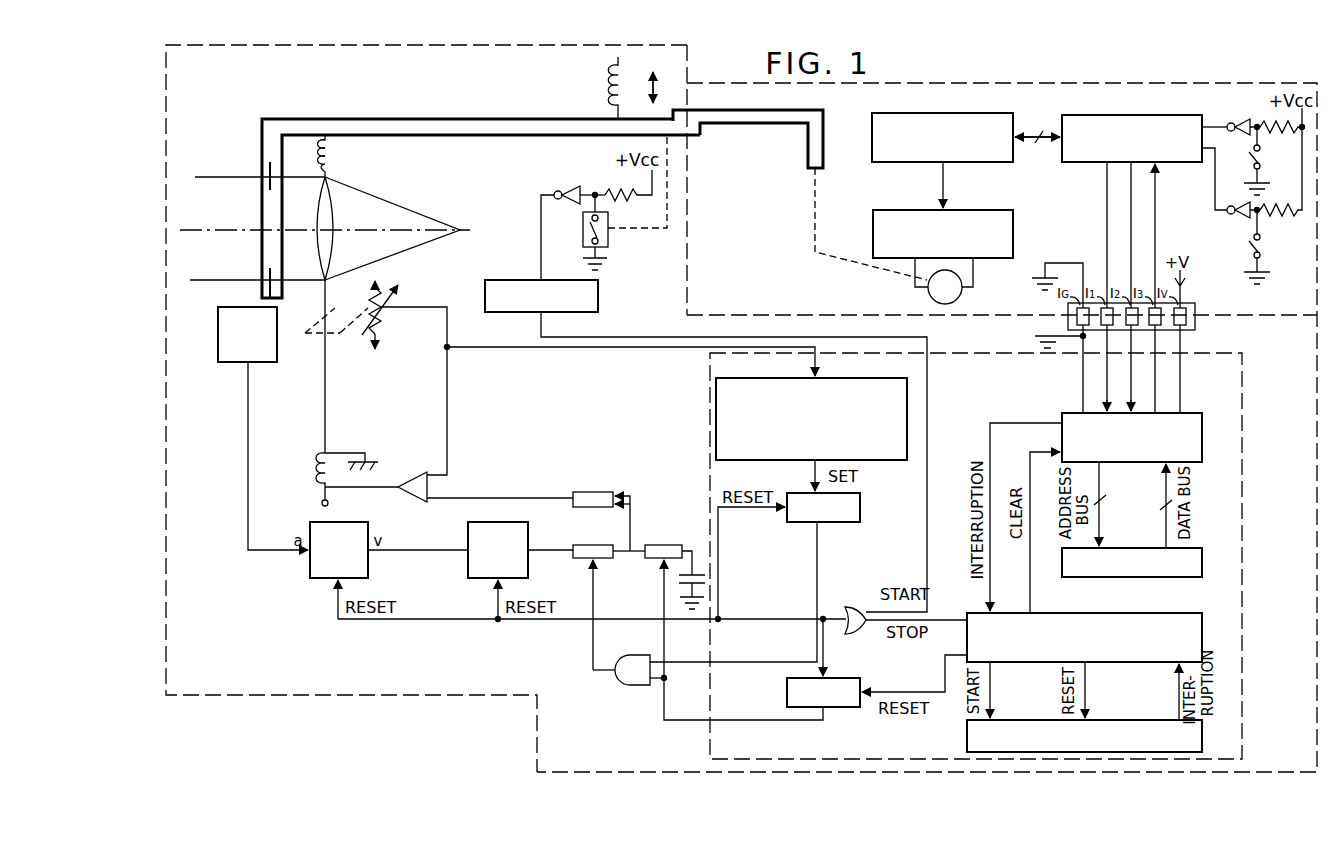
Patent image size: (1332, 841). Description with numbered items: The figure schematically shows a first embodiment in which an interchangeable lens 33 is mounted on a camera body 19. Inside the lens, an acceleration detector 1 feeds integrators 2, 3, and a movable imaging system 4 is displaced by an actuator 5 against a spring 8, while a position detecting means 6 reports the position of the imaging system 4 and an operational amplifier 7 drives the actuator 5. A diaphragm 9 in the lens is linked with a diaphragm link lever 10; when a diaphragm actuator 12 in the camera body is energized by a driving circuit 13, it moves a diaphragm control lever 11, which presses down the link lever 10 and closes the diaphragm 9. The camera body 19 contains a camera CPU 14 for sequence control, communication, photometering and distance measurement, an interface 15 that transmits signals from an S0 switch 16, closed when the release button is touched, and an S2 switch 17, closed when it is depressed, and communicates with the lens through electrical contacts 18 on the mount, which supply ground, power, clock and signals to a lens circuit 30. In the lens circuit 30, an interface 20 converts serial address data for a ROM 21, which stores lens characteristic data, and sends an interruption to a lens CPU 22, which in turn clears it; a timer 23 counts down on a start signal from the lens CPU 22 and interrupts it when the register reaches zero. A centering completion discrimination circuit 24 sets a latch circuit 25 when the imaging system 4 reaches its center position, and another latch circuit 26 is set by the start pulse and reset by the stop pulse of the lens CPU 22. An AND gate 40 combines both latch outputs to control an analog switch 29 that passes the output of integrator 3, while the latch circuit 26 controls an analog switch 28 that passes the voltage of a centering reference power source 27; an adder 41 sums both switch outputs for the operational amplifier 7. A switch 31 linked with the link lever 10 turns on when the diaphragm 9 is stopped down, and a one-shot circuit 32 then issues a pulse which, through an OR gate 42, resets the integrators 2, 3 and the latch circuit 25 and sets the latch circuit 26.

The acceleration detector 1 is at (218, 330).
The integrator 2 is at (310, 568).
The integrator 3 is at (468, 568).
The imaging system 4 is at (323, 210).
The actuator 5 is at (318, 462).
The position detecting means 6 is at (380, 315).
The operational amplifier 7 is at (417, 472).
The spring 8 is at (331, 152).
The diaphragm 9 is at (267, 167).
The diaphragm link lever 10 is at (278, 118).
The diaphragm control lever 11 is at (802, 110).
The diaphragm actuator 12 is at (962, 292).
The driving circuit 13 is at (912, 210).
The camera CPU 14 is at (962, 113).
The interface 15 is at (1116, 115).
The S0 switch 16 is at (1262, 162).
The S2 switch 17 is at (1265, 243).
The electrical contacts 18 is at (1195, 312).
The camera body 19 is at (1197, 83).
The interface 20 is at (1202, 430).
The ROM 21 is at (1202, 560).
The lens CPU 22 is at (1202, 630).
The timer 23 is at (1202, 745).
The centering completion discrimination circuit 24 is at (885, 460).
The latch circuit 25 is at (860, 507).
The latch circuit 26 is at (850, 708).
The centering reference power source 27 is at (692, 574).
The analog switch 28 is at (660, 545).
The analog switch 29 is at (585, 545).
The lens circuit 30 is at (710, 730).
The switch 31 is at (610, 237).
The one-shot circuit 32 is at (600, 297).
The interchangeable lens 33 is at (390, 695).
The AND gate 40 is at (628, 688).
The adder 41 is at (590, 492).
The OR gate 42 is at (860, 607).